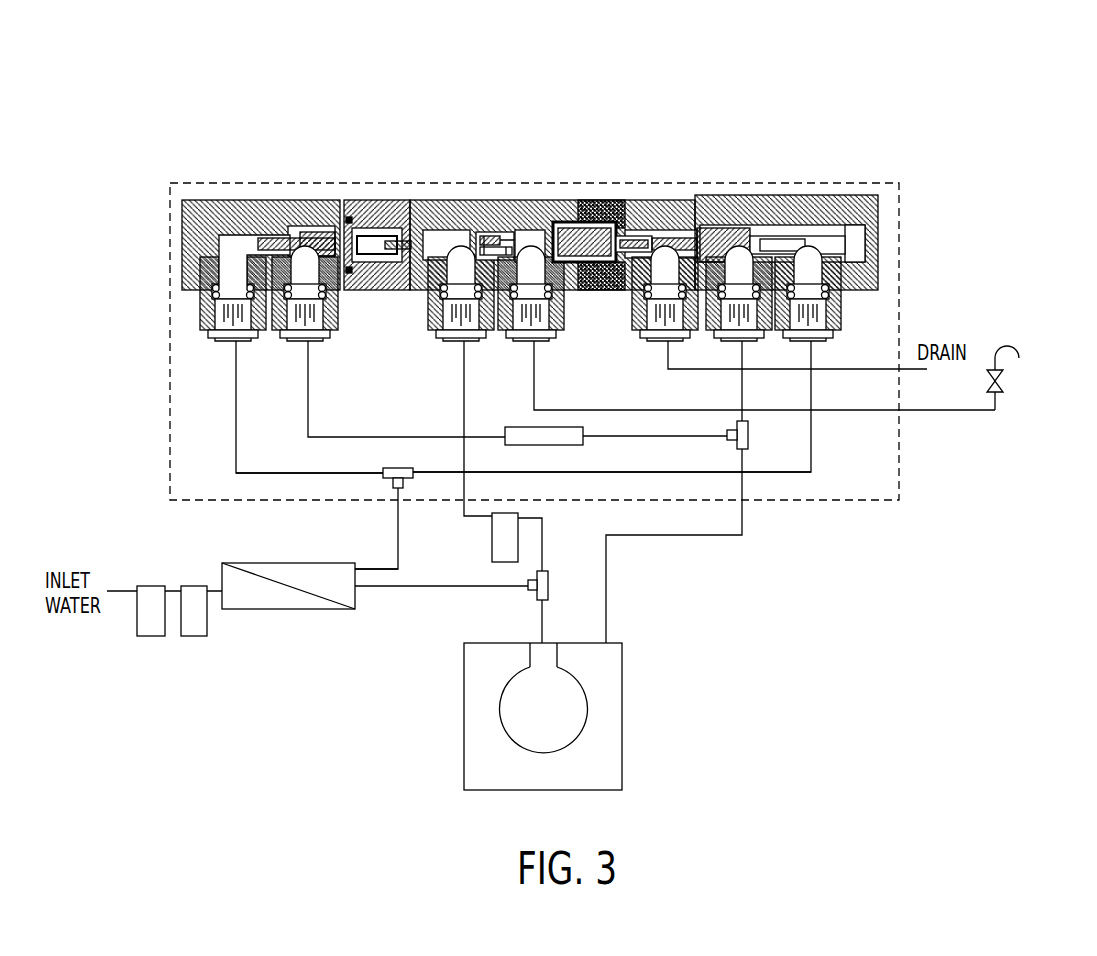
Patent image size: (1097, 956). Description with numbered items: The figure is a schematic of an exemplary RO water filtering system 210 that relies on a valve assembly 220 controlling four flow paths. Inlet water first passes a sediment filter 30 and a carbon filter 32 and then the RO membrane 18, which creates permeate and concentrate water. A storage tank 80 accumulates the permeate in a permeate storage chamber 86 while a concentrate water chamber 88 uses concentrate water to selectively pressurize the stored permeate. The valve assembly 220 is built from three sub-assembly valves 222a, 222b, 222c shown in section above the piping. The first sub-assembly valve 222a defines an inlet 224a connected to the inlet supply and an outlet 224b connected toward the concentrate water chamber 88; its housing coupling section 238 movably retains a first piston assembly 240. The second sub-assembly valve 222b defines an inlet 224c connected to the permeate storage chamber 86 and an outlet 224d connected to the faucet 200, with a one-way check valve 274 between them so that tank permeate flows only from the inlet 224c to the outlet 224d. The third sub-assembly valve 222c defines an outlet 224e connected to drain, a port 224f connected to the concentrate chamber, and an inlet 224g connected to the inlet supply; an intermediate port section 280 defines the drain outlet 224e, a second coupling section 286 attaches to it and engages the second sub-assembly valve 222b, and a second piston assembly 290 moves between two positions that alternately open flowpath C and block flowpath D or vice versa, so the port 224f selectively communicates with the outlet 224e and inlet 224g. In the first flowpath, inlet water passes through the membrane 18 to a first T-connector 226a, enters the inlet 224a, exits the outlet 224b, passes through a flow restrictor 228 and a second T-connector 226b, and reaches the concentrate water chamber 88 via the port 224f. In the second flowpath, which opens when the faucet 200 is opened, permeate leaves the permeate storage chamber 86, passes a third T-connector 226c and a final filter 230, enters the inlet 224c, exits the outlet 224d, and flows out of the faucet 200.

The RO water filtering system 210 is at (233, 98).
The valve assembly 220 is at (853, 177).
The first sub-assembly valve 222a is at (204, 200).
The second sub-assembly valve 222b is at (441, 202).
The third sub-assembly valve 222c is at (876, 207).
The first piston assembly 240 is at (318, 206).
The housing coupling section 238 is at (373, 212).
The one-way check valve 274 is at (505, 228).
The second coupling section 286 is at (598, 204).
The intermediate port section 280 is at (666, 210).
The second piston assembly 290 is at (718, 232).
The inlet 224a is at (220, 344).
The outlet 224b is at (312, 344).
The inlet 224c is at (444, 344).
The outlet 224d is at (545, 344).
The outlet 224e is at (652, 344).
The port 224f is at (752, 344).
The inlet 224g is at (822, 344).
The first T-connector 226a is at (385, 468).
The second T-connector 226b is at (728, 447).
The third T-connector 226c is at (528, 588).
The flow restrictor 228 is at (530, 447).
The final filter 230 is at (492, 537).
The RO membrane 18 is at (295, 615).
The sediment filter 30 is at (150, 637).
The carbon filter 32 is at (193, 637).
The storage tank 80 is at (578, 716).
The permeate storage chamber 86 is at (532, 722).
The concentrate water chamber 88 is at (532, 782).
The faucet 200 is at (1023, 337).